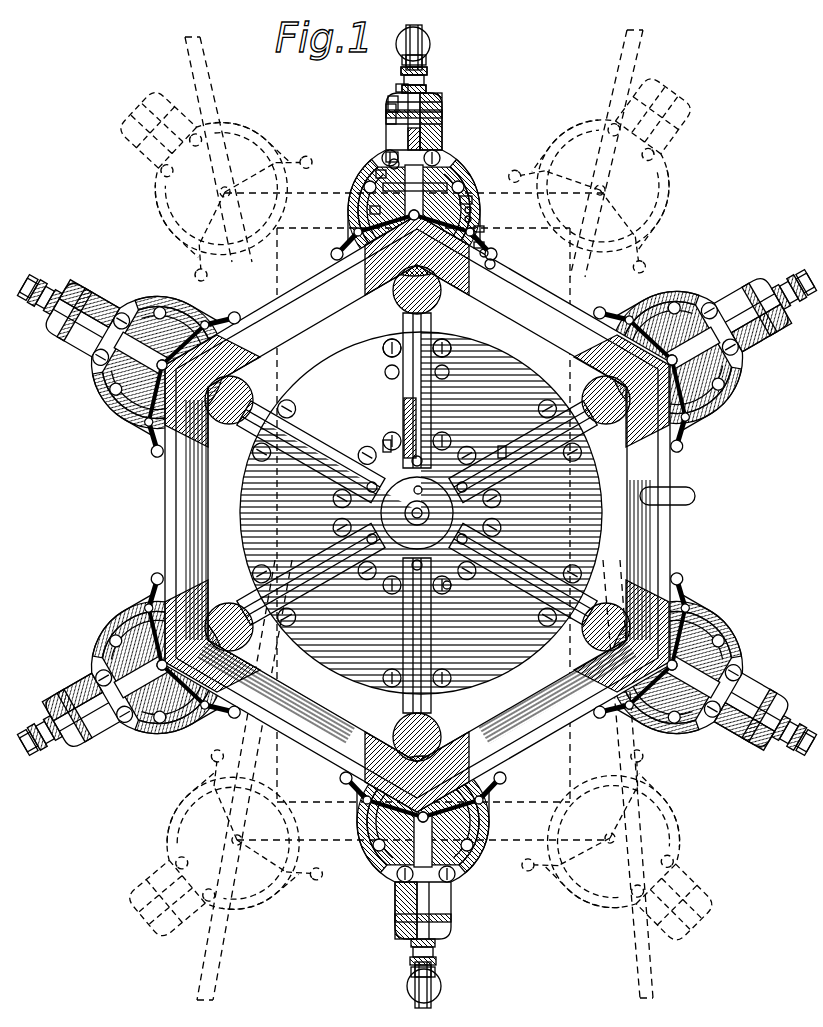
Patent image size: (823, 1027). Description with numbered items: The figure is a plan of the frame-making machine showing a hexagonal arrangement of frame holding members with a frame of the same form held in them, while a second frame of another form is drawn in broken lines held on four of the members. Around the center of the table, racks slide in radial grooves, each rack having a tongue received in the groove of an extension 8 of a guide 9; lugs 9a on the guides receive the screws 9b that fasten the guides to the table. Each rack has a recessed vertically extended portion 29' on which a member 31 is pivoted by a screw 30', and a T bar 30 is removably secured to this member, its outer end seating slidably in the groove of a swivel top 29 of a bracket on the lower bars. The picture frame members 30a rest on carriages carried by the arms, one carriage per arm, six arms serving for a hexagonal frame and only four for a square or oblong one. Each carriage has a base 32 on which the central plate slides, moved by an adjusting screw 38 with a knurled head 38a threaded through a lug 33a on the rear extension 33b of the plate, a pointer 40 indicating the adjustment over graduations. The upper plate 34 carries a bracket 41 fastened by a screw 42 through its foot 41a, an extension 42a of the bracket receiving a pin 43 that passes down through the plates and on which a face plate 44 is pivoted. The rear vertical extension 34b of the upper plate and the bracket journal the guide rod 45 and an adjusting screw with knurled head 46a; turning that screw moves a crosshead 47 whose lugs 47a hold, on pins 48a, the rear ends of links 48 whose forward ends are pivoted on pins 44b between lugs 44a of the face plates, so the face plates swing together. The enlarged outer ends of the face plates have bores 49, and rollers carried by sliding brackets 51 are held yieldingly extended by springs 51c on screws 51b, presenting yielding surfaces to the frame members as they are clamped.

The extension 8 is at (380, 632).
The guide 9 is at (400, 335).
The lug 9a is at (383, 348).
The screw 9b is at (385, 372).
The swivel top 29 is at (437, 515).
The recessed vertically extended portion 29' is at (444, 545).
The T bar 30 is at (417, 516).
The screw 30' is at (446, 441).
The picture frame member 30a is at (417, 513).
The member 31 is at (404, 420).
The base 32 is at (426, 87).
The lug 33a is at (442, 102).
The rear extension 33b is at (442, 124).
The upper plate 34 is at (513, 883).
The vertical extension 34b is at (386, 110).
The adjusting screw 38 is at (442, 112).
The knurled head 38a is at (427, 72).
The pointer 40 is at (390, 98).
The bracket 41 is at (462, 194).
The foot 41a is at (378, 174).
The screw 42 is at (384, 187).
The extension 42a is at (370, 210).
The pin 43 is at (472, 200).
The face plate 44 is at (385, 798).
The lug 44a is at (471, 210).
The pin 44b is at (471, 219).
The guide rod 45 is at (421, 138).
The knurled head 46a is at (398, 86).
The crosshead 47 is at (388, 147).
The lug 47a is at (390, 163).
The link 48 is at (455, 172).
The pin 48a is at (390, 156).
The bore 49 is at (495, 265).
The bracket 51 is at (488, 253).
The screw 51b is at (484, 229).
The spring 51c is at (484, 245).